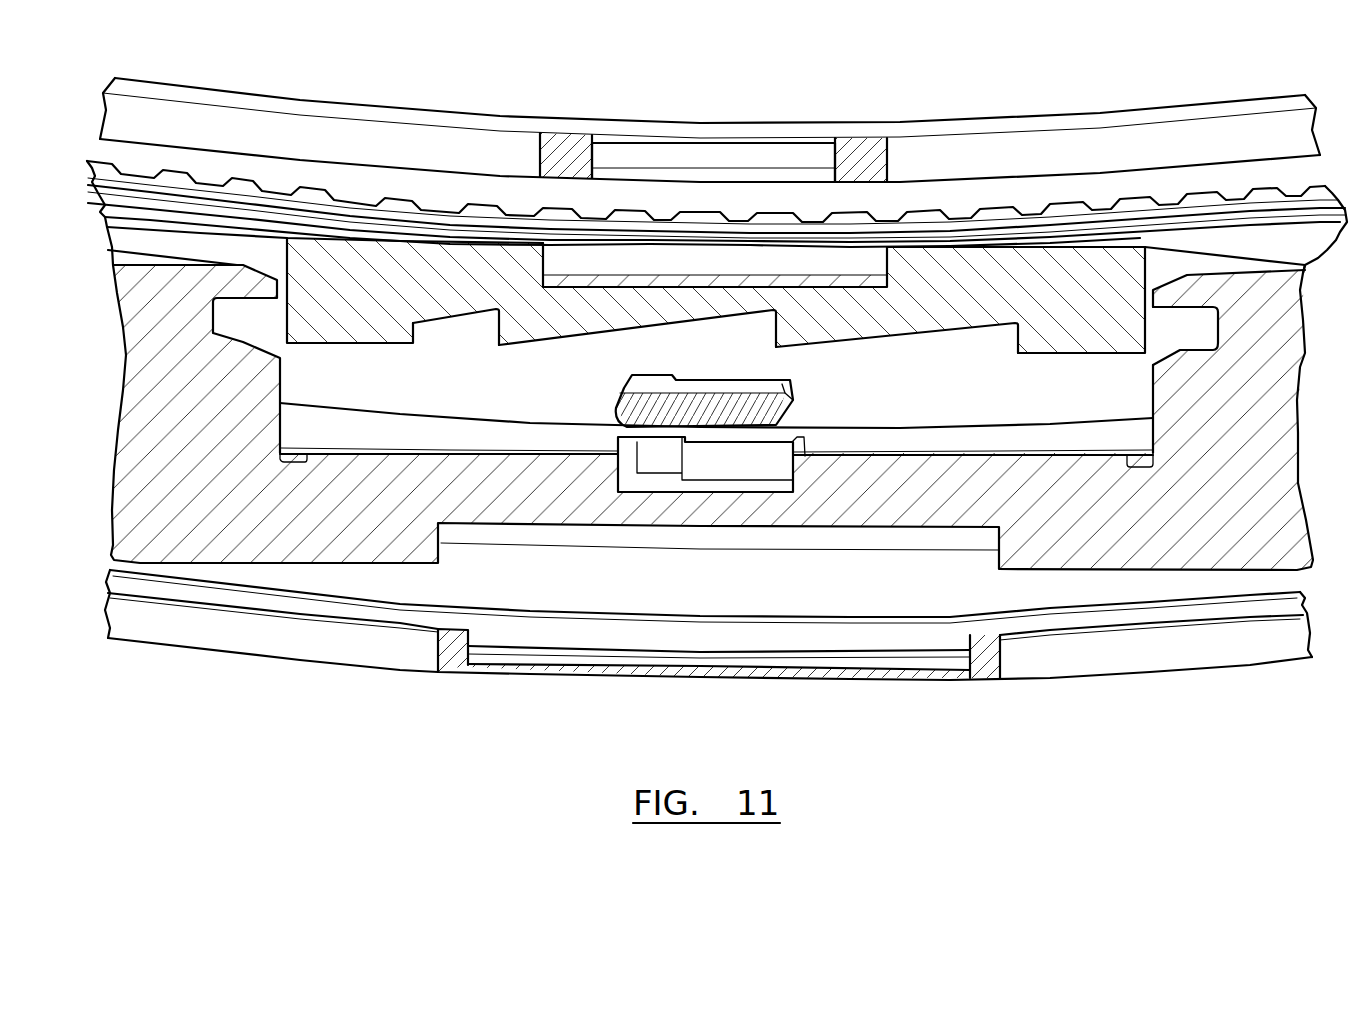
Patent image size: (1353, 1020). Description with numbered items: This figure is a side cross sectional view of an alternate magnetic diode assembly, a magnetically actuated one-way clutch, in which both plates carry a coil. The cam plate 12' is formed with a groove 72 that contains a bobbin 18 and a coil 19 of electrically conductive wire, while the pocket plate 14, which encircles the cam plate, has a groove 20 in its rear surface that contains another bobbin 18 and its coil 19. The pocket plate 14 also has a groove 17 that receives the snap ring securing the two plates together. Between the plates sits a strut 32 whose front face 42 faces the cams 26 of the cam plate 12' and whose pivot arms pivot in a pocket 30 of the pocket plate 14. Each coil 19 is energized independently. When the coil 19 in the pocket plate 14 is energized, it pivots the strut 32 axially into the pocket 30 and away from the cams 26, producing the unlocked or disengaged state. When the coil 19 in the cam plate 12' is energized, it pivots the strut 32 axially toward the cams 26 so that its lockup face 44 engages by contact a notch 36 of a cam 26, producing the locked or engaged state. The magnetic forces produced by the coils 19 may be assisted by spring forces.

The cam plate 12' is at (706, 290).
The pocket plate 14 is at (213, 435).
The groove 17 is at (1213, 328).
The bobbin 18 is at (1012, 184).
The coil 19 is at (709, 152).
The groove 20 is at (447, 541).
The cam 26 is at (374, 346).
The pocket 30 is at (655, 458).
The strut 32 is at (636, 413).
The notch 36 is at (490, 333).
The front face 42 is at (760, 385).
The lockup face 44 is at (783, 398).
The groove 72 is at (543, 253).